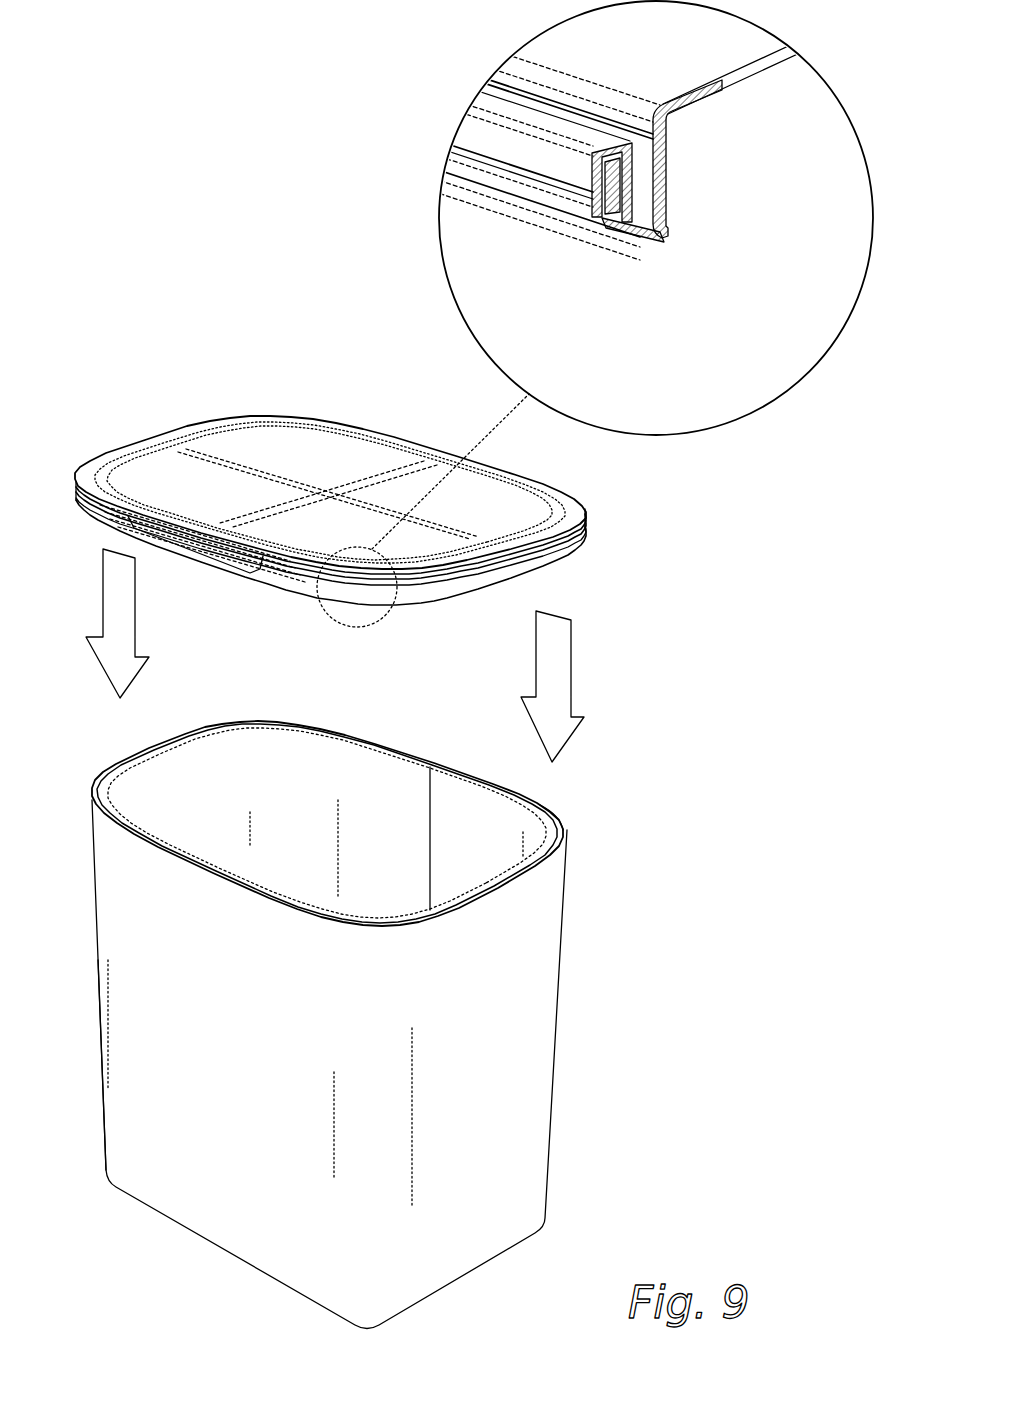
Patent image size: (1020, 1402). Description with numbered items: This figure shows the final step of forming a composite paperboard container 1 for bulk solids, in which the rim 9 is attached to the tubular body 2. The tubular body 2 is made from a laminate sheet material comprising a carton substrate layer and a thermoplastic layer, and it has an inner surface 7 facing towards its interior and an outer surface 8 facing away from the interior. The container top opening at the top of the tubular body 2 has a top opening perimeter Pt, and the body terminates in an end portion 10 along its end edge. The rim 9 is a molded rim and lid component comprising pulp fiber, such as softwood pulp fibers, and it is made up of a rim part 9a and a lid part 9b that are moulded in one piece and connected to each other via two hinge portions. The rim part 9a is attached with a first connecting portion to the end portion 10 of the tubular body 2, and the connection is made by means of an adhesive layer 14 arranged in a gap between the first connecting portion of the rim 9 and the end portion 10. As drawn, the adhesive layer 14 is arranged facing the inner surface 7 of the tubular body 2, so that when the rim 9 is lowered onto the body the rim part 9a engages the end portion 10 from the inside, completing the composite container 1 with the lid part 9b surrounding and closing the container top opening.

The composite paperboard container 1 is at (760, 528).
The tubular body 2 is at (131, 1123).
The inner surface 7 is at (305, 757).
The outer surface 8 is at (121, 1035).
The rim 9 is at (296, 362).
The rim part 9a is at (586, 522).
The lid part 9b is at (226, 441).
The end portion 10 is at (549, 882).
The adhesive layer 14 is at (608, 192).
The top opening perimeter Pt is at (545, 802).